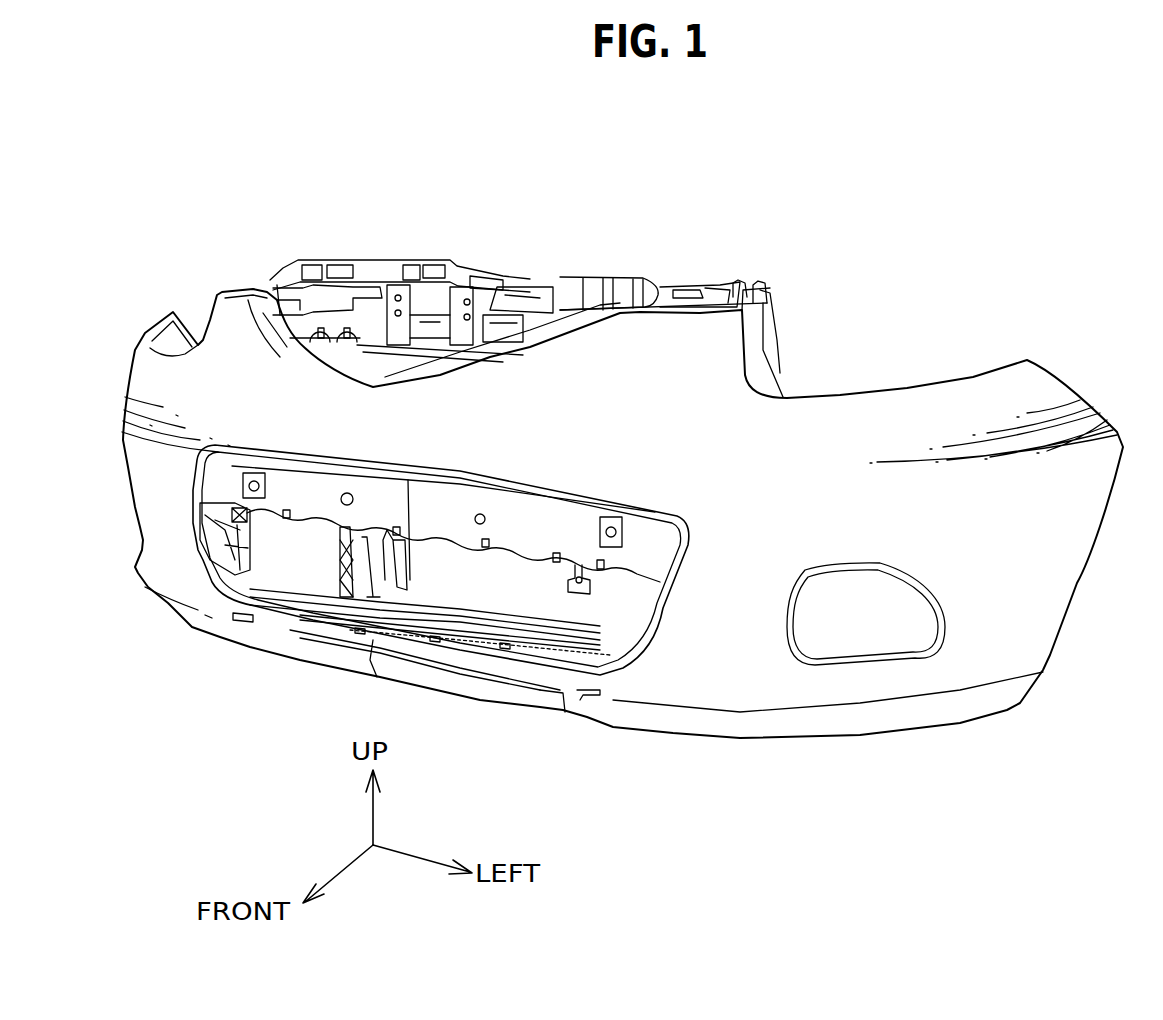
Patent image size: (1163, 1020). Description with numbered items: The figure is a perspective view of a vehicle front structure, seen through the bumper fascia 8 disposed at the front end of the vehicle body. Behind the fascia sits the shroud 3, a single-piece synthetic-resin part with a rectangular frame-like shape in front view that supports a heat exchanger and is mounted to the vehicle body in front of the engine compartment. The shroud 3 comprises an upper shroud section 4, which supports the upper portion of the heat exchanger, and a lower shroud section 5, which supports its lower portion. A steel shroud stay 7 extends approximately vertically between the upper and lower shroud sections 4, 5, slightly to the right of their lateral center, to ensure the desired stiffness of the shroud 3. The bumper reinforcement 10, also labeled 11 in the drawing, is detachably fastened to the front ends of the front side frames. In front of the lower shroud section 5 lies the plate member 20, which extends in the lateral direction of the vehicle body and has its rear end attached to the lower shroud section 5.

The shroud 3 is at (530, 257).
The upper shroud section 4 is at (648, 278).
The lower shroud section 5 is at (577, 632).
The shroud stay 7 is at (380, 567).
The bumper fascia 8 is at (1043, 573).
The bumper reinforcement 10 is at (427, 620).
The grille member 11 is at (522, 530).
The plate member 20 is at (483, 610).